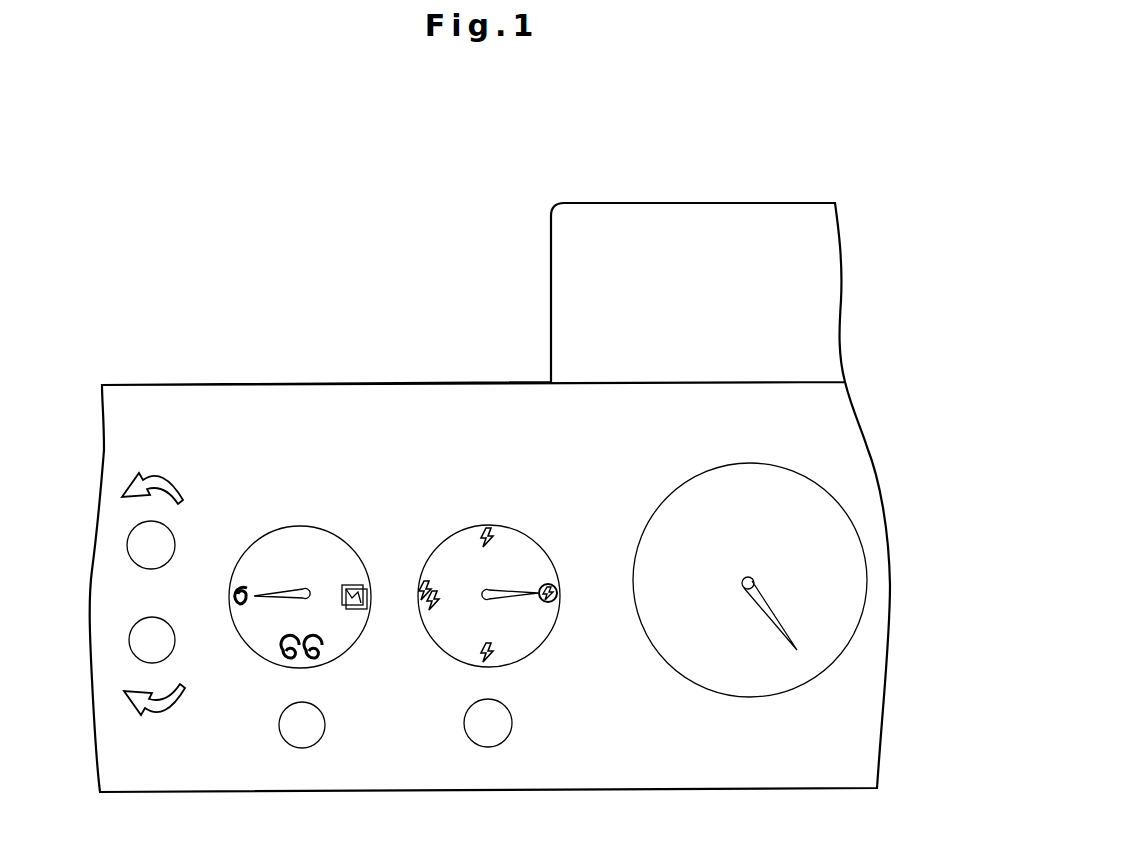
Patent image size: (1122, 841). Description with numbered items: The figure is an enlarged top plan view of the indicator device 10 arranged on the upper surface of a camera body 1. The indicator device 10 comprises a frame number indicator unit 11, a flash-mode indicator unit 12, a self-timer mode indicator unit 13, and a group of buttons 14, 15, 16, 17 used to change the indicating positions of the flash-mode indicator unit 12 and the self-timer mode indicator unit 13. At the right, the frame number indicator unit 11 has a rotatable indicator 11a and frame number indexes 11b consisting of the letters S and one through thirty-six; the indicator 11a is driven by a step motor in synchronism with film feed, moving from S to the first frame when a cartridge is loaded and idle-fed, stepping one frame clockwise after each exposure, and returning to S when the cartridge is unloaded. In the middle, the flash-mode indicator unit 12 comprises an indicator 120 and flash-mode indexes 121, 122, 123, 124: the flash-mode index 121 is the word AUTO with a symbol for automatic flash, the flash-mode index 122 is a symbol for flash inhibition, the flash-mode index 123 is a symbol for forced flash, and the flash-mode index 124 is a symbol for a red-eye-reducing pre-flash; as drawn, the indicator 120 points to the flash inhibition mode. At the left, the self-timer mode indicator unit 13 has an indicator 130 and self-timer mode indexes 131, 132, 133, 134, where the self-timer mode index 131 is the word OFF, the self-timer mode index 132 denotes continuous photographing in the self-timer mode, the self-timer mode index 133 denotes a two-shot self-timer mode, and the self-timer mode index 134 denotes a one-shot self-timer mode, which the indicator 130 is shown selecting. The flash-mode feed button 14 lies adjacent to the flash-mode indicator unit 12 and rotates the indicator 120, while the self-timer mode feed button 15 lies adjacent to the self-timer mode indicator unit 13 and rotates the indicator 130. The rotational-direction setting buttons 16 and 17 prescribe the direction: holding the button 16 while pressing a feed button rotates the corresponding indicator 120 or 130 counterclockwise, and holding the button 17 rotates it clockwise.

The camera body 1 is at (827, 777).
The indicator device 10 is at (484, 344).
The frame number indicator unit 11 is at (750, 617).
The indicator 11a is at (752, 593).
The frame number indexes 11b is at (700, 664).
The flash-mode indicator unit 12 is at (518, 591).
The indicator 120 is at (493, 600).
The flash-mode index 121 is at (493, 527).
The flash-mode index 122 is at (543, 585).
The flash-mode index 123 is at (495, 650).
The flash-mode index 124 is at (430, 583).
The self-timer mode indicator unit 13 is at (319, 594).
The indicator 130 is at (293, 599).
The self-timer mode index 131 is at (292, 538).
The self-timer mode index 132 is at (353, 588).
The self-timer mode index 133 is at (330, 657).
The self-timer mode index 134 is at (252, 585).
The flash-mode feed button 14 is at (500, 725).
The self-timer mode feed button 15 is at (307, 717).
The rotational-direction setting button 16 is at (168, 543).
The rotational-direction setting button 17 is at (172, 638).